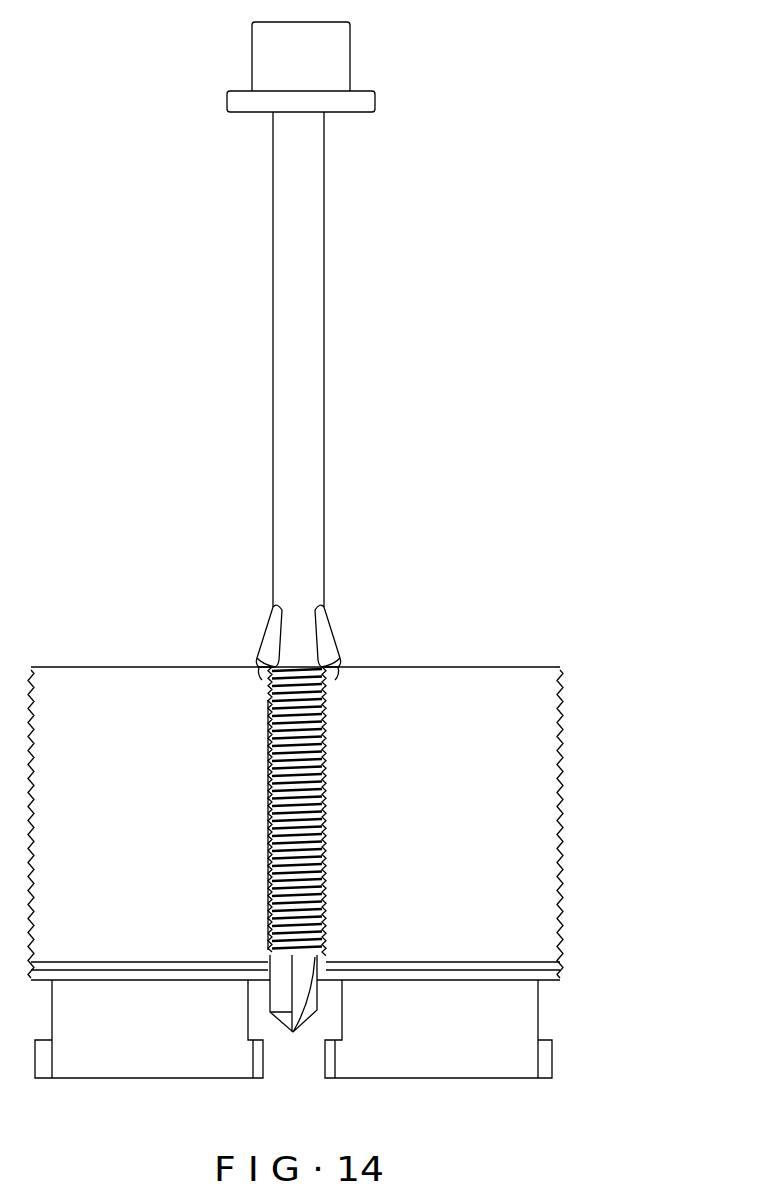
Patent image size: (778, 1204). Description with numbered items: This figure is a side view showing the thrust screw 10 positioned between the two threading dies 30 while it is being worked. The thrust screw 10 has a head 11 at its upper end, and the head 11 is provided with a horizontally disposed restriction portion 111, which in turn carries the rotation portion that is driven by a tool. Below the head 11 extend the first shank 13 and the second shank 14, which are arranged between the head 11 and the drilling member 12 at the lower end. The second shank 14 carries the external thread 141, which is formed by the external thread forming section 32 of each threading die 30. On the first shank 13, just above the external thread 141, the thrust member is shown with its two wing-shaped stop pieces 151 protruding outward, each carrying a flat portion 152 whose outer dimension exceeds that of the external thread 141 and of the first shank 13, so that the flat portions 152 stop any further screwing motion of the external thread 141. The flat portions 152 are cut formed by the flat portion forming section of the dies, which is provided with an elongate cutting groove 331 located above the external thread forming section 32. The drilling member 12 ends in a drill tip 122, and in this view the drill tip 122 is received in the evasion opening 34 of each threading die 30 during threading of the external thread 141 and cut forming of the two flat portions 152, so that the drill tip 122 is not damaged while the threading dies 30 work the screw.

The thrust screw 10 is at (205, 308).
The head 11 is at (303, 68).
The restriction portion 111 is at (232, 101).
The first shank 13 is at (368, 137).
The second shank 14 is at (297, 811).
The external thread 141 is at (268, 803).
The wing-shaped stop pieces 151 is at (267, 626).
The flat portions 152 is at (262, 670).
The drilling member 12 is at (292, 999).
The drill tip 122 is at (278, 998).
The threading dies 30 is at (295, 783).
The external thread forming section 32 is at (268, 866).
The cutting groove 331 is at (263, 664).
The evasion opening 34 is at (245, 1023).